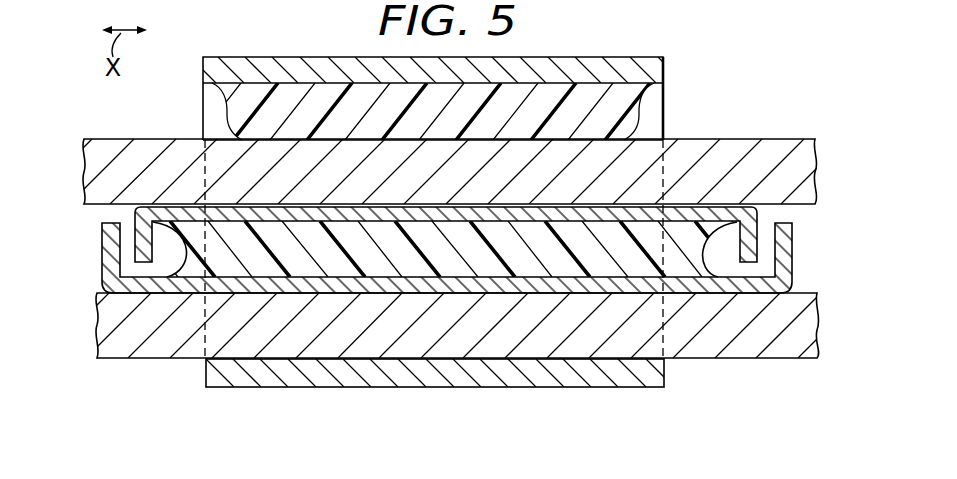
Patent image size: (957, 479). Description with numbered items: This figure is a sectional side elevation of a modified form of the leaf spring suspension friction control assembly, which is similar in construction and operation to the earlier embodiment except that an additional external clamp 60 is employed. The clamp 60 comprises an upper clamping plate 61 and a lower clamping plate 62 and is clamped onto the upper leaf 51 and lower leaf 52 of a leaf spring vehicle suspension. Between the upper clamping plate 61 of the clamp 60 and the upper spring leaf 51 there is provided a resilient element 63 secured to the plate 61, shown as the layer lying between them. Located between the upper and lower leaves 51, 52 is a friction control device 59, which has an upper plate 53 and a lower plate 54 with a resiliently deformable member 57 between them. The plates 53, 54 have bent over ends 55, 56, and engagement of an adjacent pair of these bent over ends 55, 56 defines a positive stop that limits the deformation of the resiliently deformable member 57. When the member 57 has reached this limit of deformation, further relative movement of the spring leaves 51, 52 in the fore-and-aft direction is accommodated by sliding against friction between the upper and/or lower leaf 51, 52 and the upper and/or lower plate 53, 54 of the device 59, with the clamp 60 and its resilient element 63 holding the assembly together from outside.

The upper leaf 51 is at (798, 139).
The lower leaf 52 is at (737, 359).
The upper plate 53 is at (735, 207).
The lower plate 54 is at (135, 288).
The bent over end 55 is at (135, 208).
The bent over end 56 is at (102, 260).
The resiliently deformable member 57 is at (424, 265).
The friction control device 59 is at (849, 256).
The external clamp 60 is at (580, 30).
The upper clamping plate 61 is at (243, 63).
The lower clamping plate 62 is at (237, 381).
The compliant adhesive layer 63 is at (419, 124).